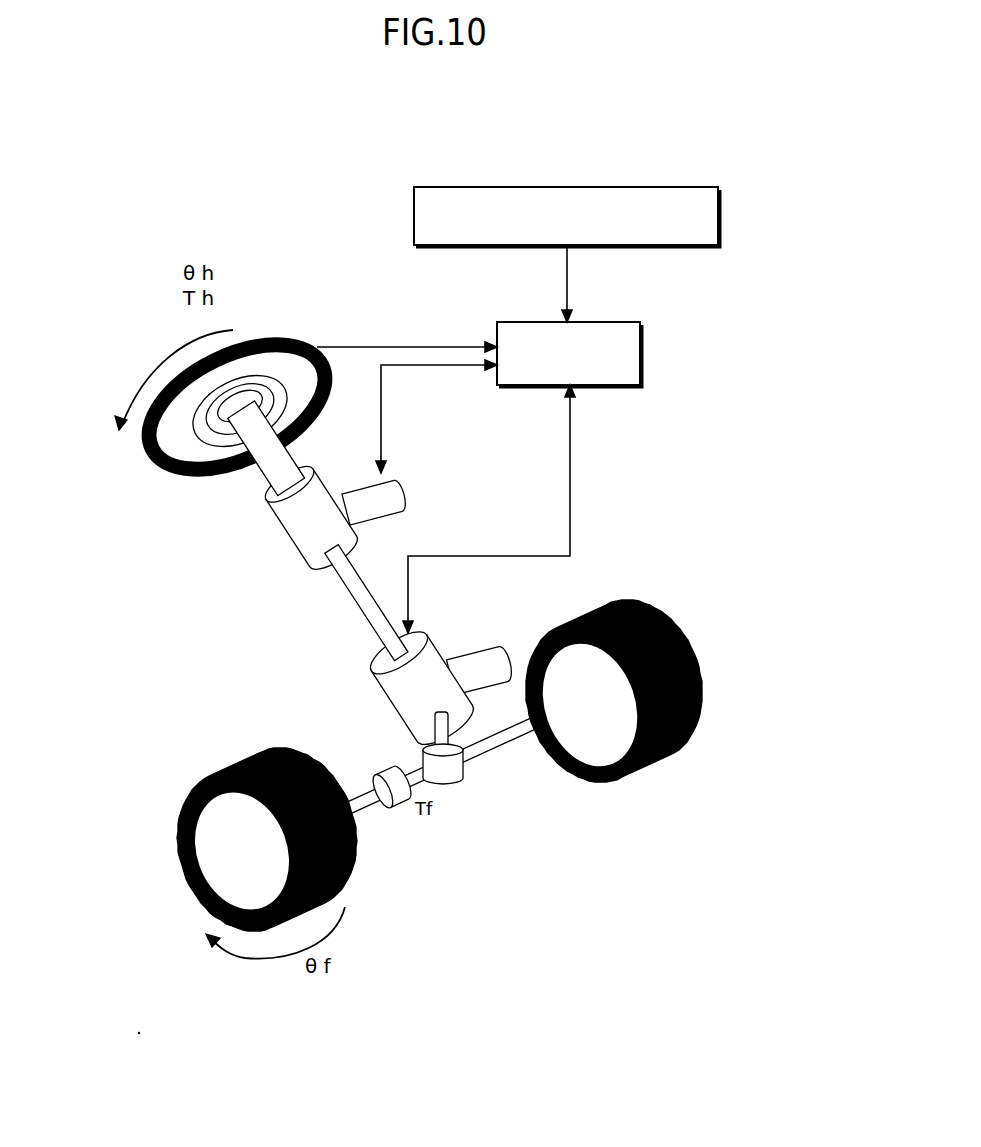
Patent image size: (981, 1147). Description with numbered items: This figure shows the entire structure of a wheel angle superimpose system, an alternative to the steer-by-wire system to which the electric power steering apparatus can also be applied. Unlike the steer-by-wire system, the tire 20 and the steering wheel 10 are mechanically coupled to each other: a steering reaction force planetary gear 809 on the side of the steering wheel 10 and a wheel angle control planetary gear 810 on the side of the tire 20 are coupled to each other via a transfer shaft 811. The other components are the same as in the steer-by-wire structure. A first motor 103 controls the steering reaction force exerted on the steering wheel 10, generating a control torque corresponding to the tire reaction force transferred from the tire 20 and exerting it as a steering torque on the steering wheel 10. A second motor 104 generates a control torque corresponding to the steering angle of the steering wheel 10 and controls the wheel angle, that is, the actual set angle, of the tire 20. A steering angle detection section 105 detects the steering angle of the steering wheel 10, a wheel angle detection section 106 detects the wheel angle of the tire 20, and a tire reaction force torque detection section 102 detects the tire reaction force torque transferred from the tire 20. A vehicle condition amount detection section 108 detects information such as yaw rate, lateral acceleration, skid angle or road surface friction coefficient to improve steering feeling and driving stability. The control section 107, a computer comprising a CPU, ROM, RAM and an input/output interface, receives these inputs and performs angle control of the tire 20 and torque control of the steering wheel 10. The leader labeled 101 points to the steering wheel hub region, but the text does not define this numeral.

The steering wheel 10 is at (283, 340).
The tire 20 is at (357, 852).
The steering shaft 101 is at (243, 431).
The tire reaction force torque detection section 102 is at (450, 783).
The first motor 103 is at (396, 502).
The second motor 104 is at (475, 673).
The steering angle detection section 105 is at (173, 380).
The wheel angle detection section 106 is at (378, 776).
The control section 107 is at (642, 367).
The vehicle condition amount detection section 108 is at (718, 222).
The steering reaction force planetary gear 809 is at (263, 508).
The wheel angle control planetary gear 810 is at (402, 692).
The transfer shaft 811 is at (365, 608).